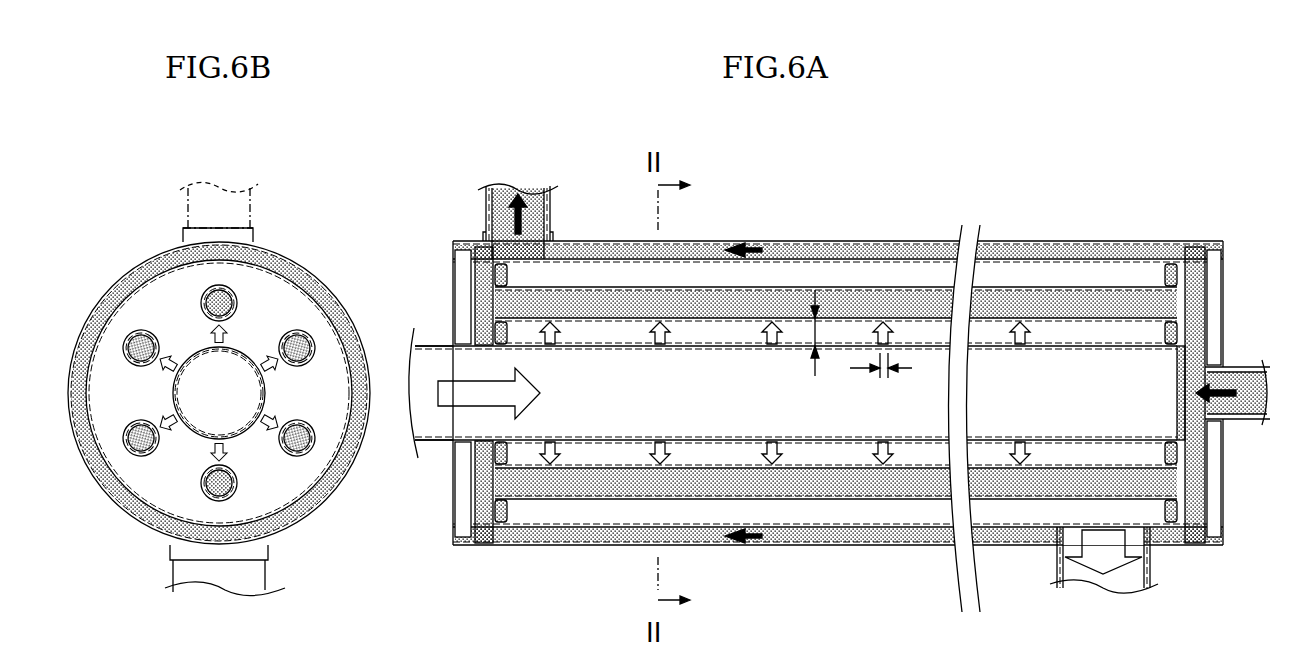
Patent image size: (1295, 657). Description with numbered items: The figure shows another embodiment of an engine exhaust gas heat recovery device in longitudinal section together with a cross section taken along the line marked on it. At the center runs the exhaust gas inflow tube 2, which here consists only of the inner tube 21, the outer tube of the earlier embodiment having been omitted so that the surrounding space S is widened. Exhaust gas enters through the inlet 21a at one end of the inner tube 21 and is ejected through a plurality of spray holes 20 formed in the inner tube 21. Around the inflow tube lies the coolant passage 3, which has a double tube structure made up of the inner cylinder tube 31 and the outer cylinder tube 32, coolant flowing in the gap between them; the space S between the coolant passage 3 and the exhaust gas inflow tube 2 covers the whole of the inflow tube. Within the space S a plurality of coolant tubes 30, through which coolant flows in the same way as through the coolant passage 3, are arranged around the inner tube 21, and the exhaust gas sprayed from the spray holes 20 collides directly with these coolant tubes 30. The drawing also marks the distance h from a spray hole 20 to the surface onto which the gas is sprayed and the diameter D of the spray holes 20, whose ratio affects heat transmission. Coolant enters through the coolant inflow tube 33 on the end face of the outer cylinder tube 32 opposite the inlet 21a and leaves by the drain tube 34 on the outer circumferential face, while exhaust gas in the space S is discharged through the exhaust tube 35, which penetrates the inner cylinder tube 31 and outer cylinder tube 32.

In FIG. 6B, the exhaust gas inflow tube 2 is at (211, 450).
In FIG. 6A, the exhaust gas inflow tube 2 is at (785, 467).
In FIG. 6B, the coolant passage 3 is at (190, 428).
In FIG. 6A, the coolant passage 3 is at (838, 318).
In FIG. 6B, the spray holes 20 is at (243, 350).
In FIG. 6A, the spray holes 20 is at (547, 438).
In FIG. 6B, the inner tube 21 is at (250, 437).
In FIG. 6A, the inner tube 21 is at (637, 441).
In FIG. 6A, the inlet 21a is at (443, 443).
In FIG. 6B, the coolant tubes 30 is at (227, 292).
In FIG. 6A, the coolant tubes 30 is at (885, 285).
In FIG. 6B, the inner cylinder tube 31 is at (75, 447).
In FIG. 6A, the inner cylinder tube 31 is at (1057, 259).
In FIG. 6B, the outer cylinder tube 32 is at (93, 477).
In FIG. 6A, the outer cylinder tube 32 is at (1105, 157).
In FIG. 6A, the coolant inflow tube 33 is at (1248, 367).
In FIG. 6B, the drain tube 34 is at (183, 205).
In FIG. 6A, the drain tube 34 is at (551, 200).
In FIG. 6B, the exhaust tube 35 is at (262, 590).
In FIG. 6A, the exhaust tube 35 is at (1057, 567).
In FIG. 6B, the space S is at (268, 308).
In FIG. 6A, the space S is at (1113, 278).
In FIG. 6A, the distance h is at (803, 333).
In FIG. 6A, the diameter D is at (869, 368).